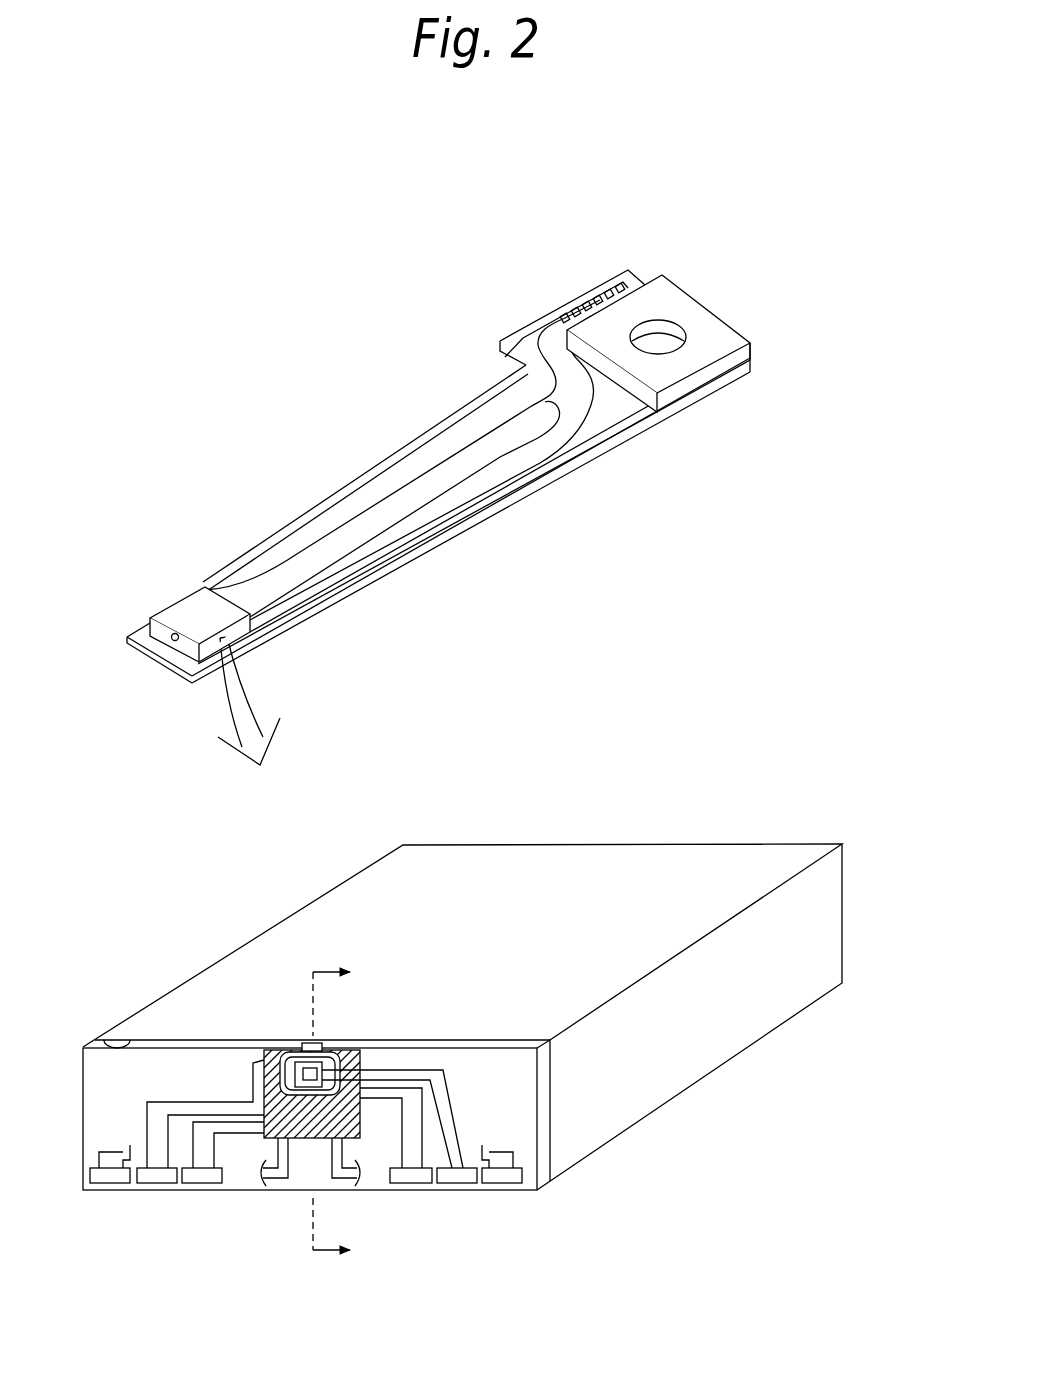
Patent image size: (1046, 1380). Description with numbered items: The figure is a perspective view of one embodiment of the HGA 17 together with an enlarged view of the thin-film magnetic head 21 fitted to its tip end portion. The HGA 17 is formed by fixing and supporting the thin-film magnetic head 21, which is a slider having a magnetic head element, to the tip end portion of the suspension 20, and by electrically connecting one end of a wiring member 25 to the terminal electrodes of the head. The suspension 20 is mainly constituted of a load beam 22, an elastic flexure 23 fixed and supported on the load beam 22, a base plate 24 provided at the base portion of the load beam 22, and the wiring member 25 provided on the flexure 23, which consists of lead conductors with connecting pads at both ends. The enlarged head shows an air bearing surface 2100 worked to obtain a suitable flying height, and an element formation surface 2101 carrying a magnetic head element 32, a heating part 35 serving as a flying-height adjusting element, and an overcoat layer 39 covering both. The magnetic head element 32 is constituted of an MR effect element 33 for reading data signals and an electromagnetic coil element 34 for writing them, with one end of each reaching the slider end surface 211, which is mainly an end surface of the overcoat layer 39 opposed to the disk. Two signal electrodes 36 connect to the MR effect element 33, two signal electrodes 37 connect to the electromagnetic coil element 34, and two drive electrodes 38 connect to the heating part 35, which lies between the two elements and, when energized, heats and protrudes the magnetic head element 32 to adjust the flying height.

The HGA 17 is at (506, 274).
The suspension 20 is at (455, 403).
The thin-film magnetic head 21 is at (180, 606).
The load beam 22 is at (593, 437).
The flexure 23 is at (510, 445).
The base plate 24 is at (708, 355).
The wiring member 25 is at (382, 545).
The air bearing surface 2100 is at (343, 898).
The element formation surface 2101 is at (107, 1040).
The slider end surface 211 is at (217, 1046).
The magnetic head element 32 is at (466, 955).
The MR effect element 33 is at (318, 1040).
The electromagnetic coil element 34 is at (340, 1040).
The heating part 35 is at (283, 1095).
The signal electrodes 36 is at (204, 1186).
The signal electrodes 37 is at (458, 1188).
The drive electrodes 38 is at (110, 1186).
The overcoat layer 39 is at (543, 1137).